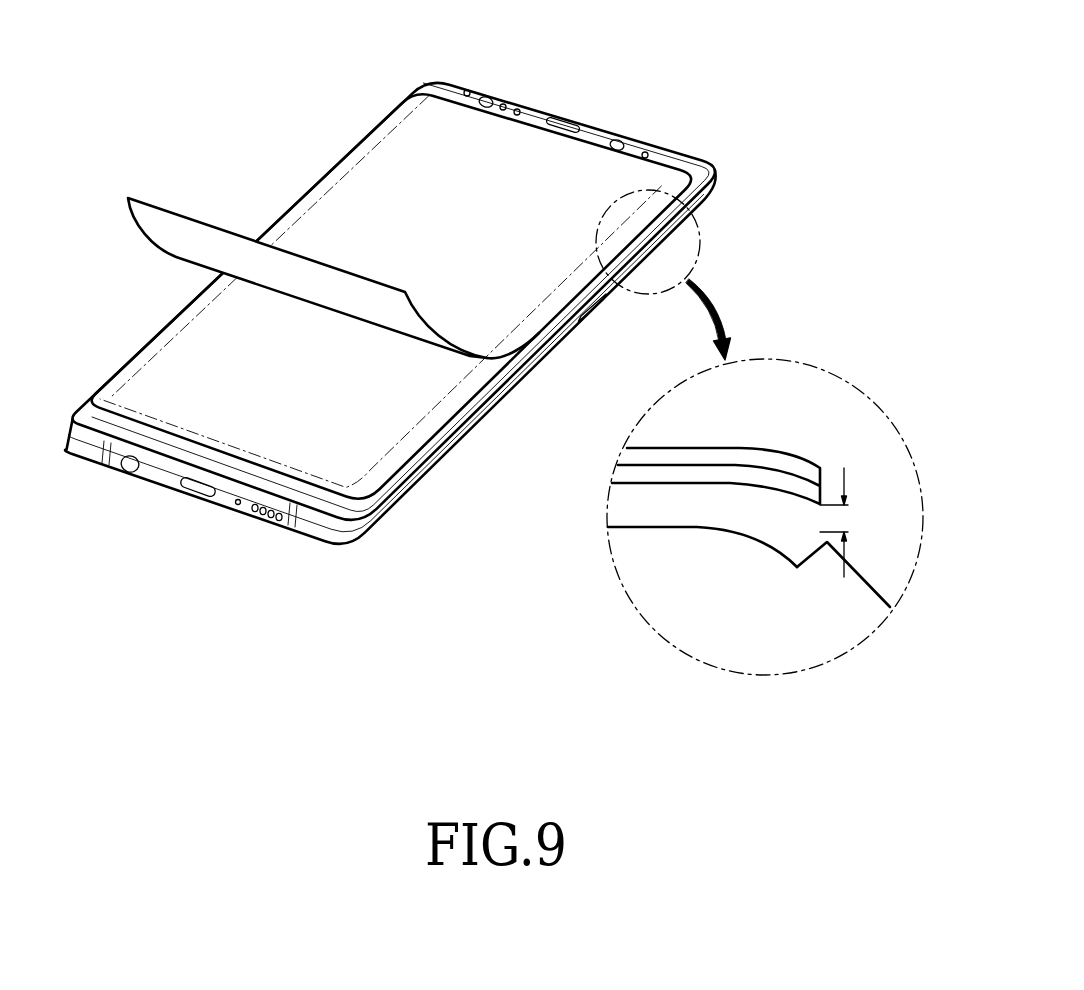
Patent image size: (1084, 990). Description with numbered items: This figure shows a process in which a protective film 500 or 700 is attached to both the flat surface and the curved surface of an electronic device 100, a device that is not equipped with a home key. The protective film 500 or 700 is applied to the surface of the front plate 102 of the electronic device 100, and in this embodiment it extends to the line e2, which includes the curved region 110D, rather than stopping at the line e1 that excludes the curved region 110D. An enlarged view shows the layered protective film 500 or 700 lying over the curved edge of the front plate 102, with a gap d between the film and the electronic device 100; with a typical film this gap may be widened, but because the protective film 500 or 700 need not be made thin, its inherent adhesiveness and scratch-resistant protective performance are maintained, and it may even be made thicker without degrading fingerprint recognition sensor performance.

The electronic device 100 is at (483, 409).
The front plate 102 is at (697, 175).
The curved region 110D is at (407, 460).
The protective film 500 is at (535, 272).
The protective film 700 is at (474, 351).
The line e1 is at (598, 285).
The line e2 is at (543, 328).
The gap distance d is at (845, 522).